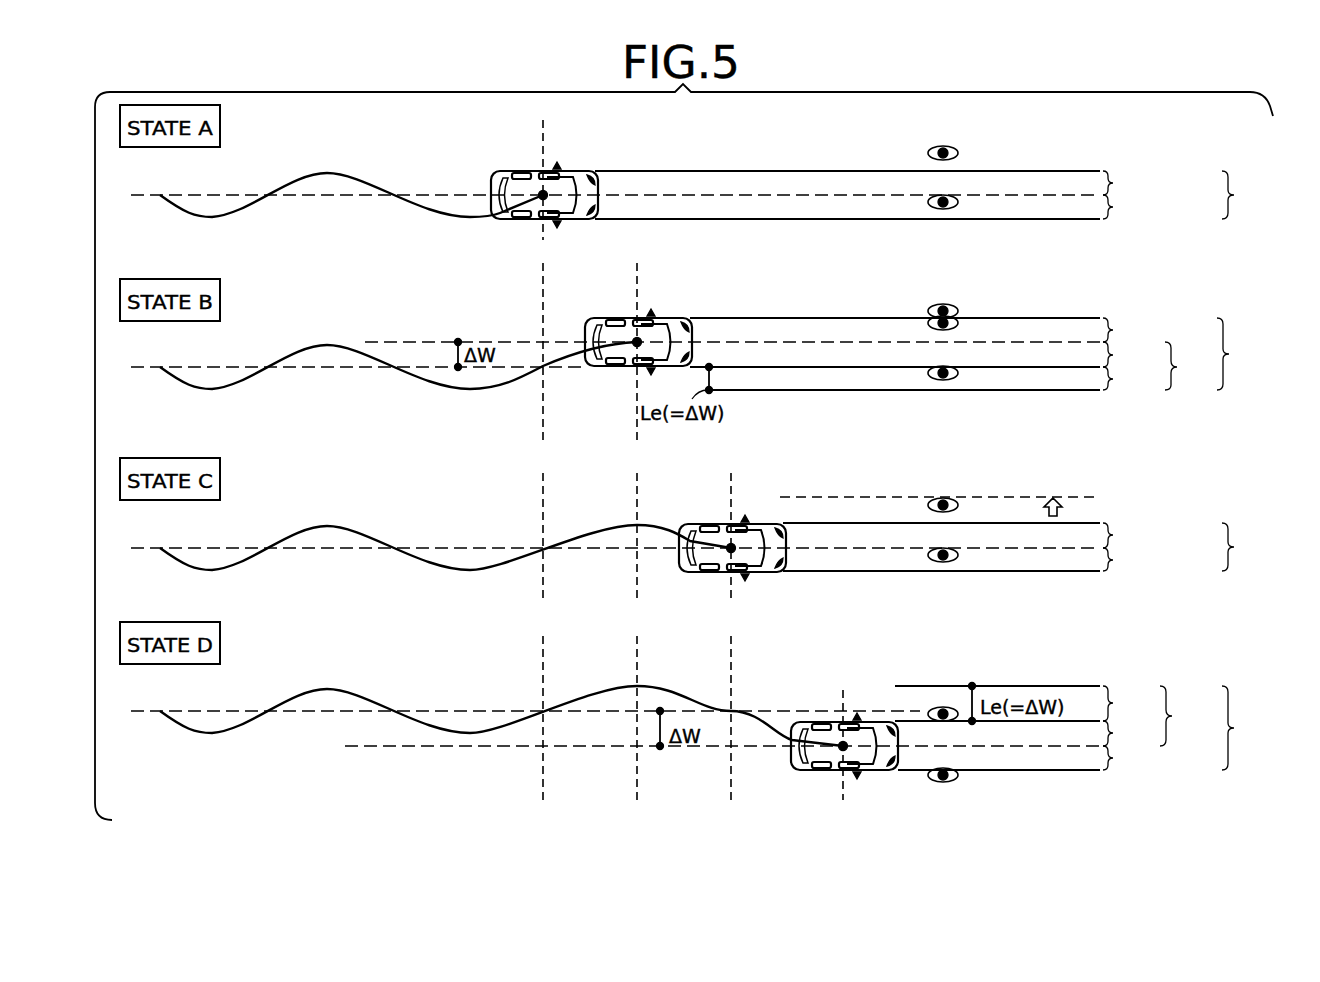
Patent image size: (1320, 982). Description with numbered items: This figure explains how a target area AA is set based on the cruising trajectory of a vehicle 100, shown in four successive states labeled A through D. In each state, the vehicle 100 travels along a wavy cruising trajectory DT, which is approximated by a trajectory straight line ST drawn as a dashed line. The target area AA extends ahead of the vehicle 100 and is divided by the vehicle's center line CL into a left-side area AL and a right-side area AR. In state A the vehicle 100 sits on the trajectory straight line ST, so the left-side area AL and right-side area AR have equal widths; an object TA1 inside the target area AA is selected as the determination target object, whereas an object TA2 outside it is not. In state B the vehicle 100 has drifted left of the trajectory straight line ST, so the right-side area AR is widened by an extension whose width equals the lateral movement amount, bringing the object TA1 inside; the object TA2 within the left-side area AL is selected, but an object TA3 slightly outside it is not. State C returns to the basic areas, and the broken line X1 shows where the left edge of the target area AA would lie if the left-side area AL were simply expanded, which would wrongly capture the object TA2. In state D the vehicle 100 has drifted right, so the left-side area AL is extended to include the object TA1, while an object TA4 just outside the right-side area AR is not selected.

The vehicle 100 is at (512, 170).
The trajectory straight line ST is at (215, 180).
The cruising trajectory DT is at (216, 218).
The center line CL is at (405, 194).
The object TA1 is at (943, 209).
The object TA2 is at (957, 150).
The object TA3 is at (928, 308).
The object TA4 is at (943, 782).
The broken line X1 is at (1049, 497).
The left-side area AL is at (1153, 458).
The right-side area AR is at (1155, 482).
The target area AA is at (1240, 470).